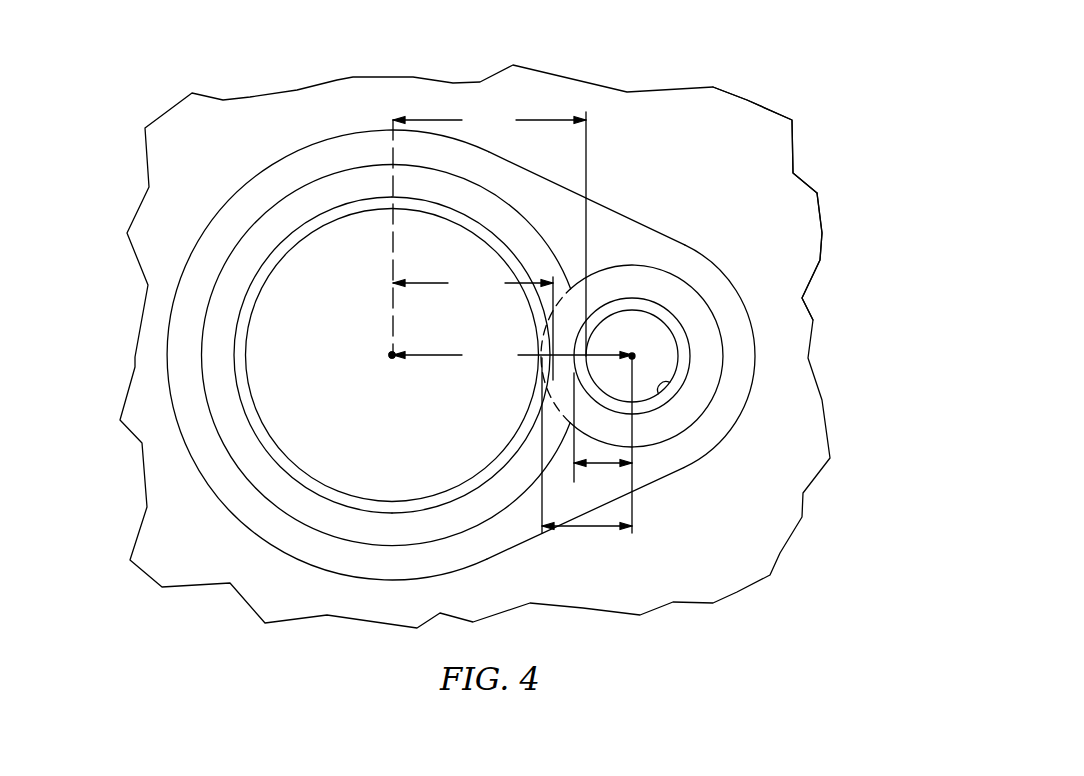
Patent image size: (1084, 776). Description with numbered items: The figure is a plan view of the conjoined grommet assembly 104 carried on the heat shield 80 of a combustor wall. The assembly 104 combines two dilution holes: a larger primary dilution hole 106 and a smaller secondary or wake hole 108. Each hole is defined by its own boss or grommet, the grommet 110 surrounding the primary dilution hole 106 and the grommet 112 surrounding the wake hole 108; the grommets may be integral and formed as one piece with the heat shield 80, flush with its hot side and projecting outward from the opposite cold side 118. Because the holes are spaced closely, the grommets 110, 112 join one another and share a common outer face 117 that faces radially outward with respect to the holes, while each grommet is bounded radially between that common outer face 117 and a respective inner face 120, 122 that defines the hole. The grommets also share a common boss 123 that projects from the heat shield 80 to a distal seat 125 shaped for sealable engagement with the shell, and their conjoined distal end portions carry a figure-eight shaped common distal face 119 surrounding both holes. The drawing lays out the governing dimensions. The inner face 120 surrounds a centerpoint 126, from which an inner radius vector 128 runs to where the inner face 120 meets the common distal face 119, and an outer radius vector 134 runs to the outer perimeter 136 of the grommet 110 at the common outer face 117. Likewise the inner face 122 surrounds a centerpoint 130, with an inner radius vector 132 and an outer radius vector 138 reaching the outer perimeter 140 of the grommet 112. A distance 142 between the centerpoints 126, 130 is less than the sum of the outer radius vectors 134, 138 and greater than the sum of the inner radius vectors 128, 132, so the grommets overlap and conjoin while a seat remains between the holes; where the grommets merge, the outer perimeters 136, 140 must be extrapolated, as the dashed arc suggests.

The heat shield 80 is at (747, 118).
The conjoined grommet assembly 104 is at (814, 149).
The cold side 118 is at (782, 236).
The outer perimeter 136 is at (350, 167).
The distal seat 125 is at (620, 227).
The common boss 123 is at (622, 240).
The common outer face 117 is at (200, 340).
The grommet 110 is at (282, 213).
The common distal face 119 is at (237, 263).
The inner face 120 is at (250, 382).
The primary dilution hole 106 is at (443, 440).
The centerpoint 126 is at (392, 355).
The outer perimeter 140 is at (665, 268).
The grommet 112 is at (702, 310).
The wake hole 108 is at (650, 341).
The centerpoint 130 is at (632, 356).
The inner face 122 is at (673, 398).
The outer radius vector 134 is at (489, 233).
The inner radius vector 128 is at (473, 326).
The distance 142 is at (512, 356).
The inner radius vector 132 is at (603, 465).
The outer radius vector 138 is at (588, 528).